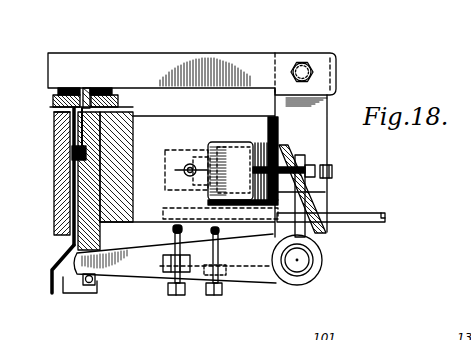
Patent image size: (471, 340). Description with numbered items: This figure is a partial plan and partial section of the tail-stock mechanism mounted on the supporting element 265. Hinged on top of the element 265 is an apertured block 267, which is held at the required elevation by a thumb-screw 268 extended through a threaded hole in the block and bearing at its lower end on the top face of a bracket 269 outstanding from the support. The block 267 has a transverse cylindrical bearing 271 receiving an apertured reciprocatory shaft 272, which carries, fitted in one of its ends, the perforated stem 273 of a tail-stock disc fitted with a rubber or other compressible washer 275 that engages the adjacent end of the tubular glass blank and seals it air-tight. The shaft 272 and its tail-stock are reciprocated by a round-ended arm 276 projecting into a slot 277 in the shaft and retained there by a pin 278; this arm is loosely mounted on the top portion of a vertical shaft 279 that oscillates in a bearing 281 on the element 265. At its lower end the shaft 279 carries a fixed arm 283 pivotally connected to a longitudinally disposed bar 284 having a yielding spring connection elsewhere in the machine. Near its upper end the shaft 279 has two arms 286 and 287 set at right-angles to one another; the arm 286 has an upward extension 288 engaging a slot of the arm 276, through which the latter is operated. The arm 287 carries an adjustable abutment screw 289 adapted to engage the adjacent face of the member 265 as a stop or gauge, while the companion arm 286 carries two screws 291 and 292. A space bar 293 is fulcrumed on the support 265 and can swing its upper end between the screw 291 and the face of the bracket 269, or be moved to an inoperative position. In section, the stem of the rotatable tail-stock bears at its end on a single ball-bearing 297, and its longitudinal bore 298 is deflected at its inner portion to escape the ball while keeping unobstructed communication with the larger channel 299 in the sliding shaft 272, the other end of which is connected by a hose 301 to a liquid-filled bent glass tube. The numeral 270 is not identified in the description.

The supporting element 265 is at (281, 143).
The apertured block 267 is at (175, 148).
The thumb-screw 268 is at (188, 163).
The bracket 269 is at (176, 184).
The insulating block top 270 is at (56, 114).
The cylindrical bearing 271 is at (71, 182).
The reciprocatory shaft 272 is at (90, 197).
The perforated stem 273 is at (56, 137).
The compressible washer 275 is at (67, 88).
The round-ended arm 276 is at (142, 267).
The slot 277 is at (100, 291).
The pin 278 is at (88, 283).
The vertical shaft 279 is at (303, 266).
The bearing 281 is at (327, 238).
The arm 283 is at (313, 142).
The longitudinally disposed bar 284 is at (208, 64).
The arm 286 is at (254, 268).
The arm 287 is at (340, 193).
The upward extension 288 is at (212, 295).
The adjustable abutment screw 289 is at (333, 170).
The screw 291 is at (172, 233).
The screw 292 is at (216, 234).
The space bar 293 is at (378, 223).
The ball-bearing 297 is at (70, 162).
The longitudinal bore 298 is at (112, 116).
The channel 299 is at (131, 171).
The hose 301 is at (50, 294).